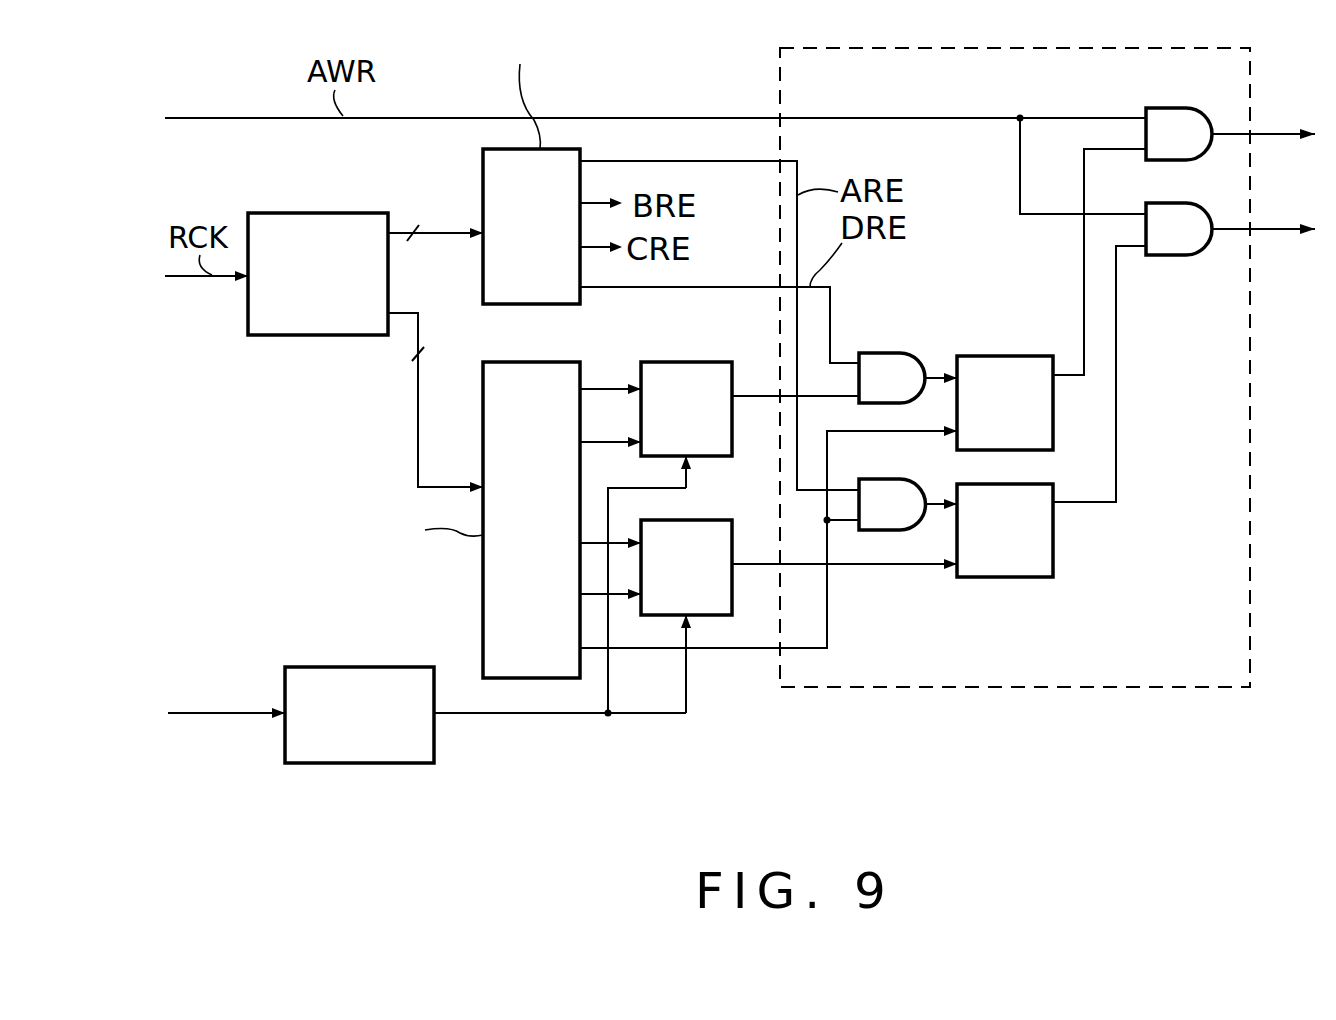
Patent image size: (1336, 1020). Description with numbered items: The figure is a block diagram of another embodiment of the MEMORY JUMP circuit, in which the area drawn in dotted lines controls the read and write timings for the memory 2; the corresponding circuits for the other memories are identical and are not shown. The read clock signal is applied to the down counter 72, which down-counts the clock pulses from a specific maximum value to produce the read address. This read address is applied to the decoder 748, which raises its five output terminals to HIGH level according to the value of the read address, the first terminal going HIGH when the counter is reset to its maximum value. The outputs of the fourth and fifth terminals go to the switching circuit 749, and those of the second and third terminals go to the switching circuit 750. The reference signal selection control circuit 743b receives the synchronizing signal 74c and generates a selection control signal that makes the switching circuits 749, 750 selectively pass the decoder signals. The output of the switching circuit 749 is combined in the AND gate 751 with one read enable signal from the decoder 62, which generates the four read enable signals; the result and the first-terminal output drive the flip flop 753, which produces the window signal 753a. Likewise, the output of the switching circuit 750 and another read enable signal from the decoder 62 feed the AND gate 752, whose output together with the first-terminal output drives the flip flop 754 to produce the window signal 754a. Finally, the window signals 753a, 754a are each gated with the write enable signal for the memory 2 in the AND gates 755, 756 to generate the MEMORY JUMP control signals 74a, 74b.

The down counter 72 is at (317, 213).
The decoder 62 is at (483, 160).
The memory 2 is at (435, 219).
The decoder 748 is at (540, 362).
The switching circuit 749 is at (665, 362).
The switching circuit 750 is at (688, 520).
The AND gate 751 is at (886, 353).
The AND gate 752 is at (867, 479).
The flip flop 753 is at (1006, 356).
The flip flop 754 is at (1005, 577).
The window signal 753a is at (1084, 252).
The window signal 754a is at (1116, 314).
The AND gate 755 is at (1183, 108).
The AND gate 756 is at (1182, 195).
The reference signal selection control circuit 743b is at (356, 667).
The MEMORY JUMP control signal 74a is at (1286, 133).
The MEMORY JUMP control signal 74b is at (1285, 232).
The synchronizing signal 74c is at (214, 712).